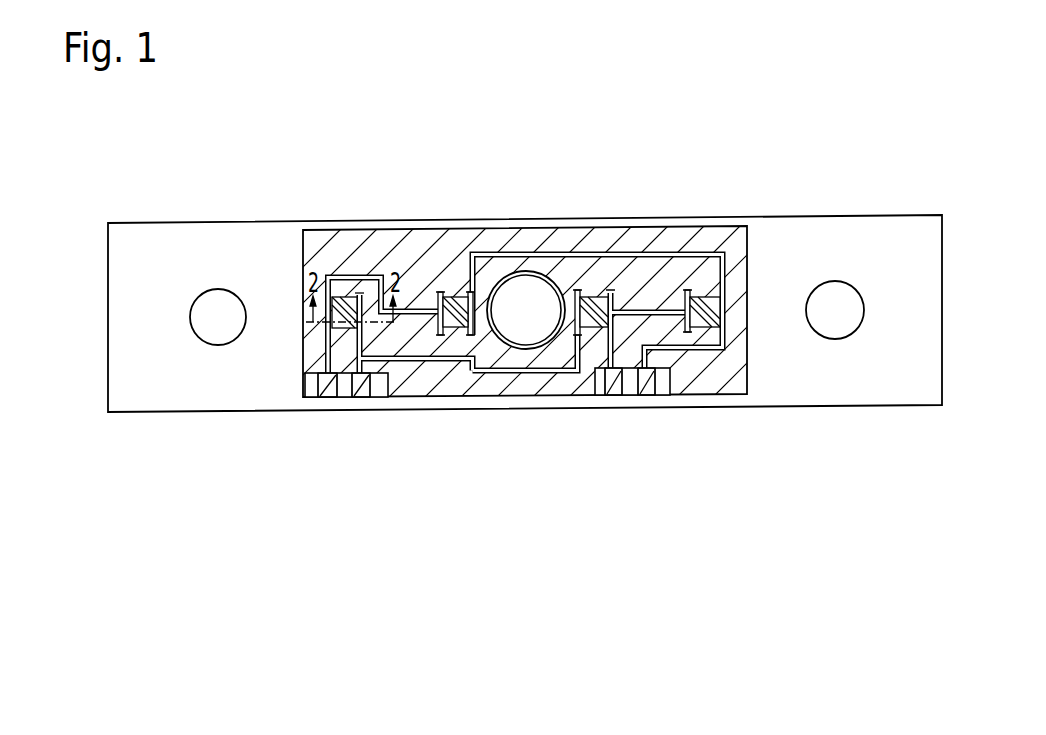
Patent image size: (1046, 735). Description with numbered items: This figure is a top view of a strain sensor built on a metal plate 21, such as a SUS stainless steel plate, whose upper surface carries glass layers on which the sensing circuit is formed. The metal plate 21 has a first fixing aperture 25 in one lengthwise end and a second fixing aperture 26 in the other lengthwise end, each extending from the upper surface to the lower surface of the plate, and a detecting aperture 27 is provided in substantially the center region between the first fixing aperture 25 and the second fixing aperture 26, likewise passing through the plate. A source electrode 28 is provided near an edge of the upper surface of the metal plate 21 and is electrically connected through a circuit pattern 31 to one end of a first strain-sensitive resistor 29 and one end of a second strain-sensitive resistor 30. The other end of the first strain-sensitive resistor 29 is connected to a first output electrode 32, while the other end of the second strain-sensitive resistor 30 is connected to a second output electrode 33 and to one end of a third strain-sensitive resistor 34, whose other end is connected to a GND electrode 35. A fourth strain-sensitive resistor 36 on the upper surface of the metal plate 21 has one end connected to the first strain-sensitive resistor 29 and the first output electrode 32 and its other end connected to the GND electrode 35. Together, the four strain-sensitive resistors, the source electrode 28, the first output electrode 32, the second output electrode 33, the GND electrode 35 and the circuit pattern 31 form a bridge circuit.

The metal plate 21 is at (228, 403).
The first fixing aperture 25 is at (217, 289).
The second fixing aperture 26 is at (840, 282).
The detecting aperture 27 is at (508, 277).
The source electrode 28 is at (640, 395).
The first strain-sensitive resistor 29 is at (697, 290).
The second strain-sensitive resistor 30 is at (447, 297).
The circuit pattern 31 is at (538, 373).
The first output electrode 32 is at (610, 395).
The second output electrode 33 is at (330, 398).
The third strain-sensitive resistor 34 is at (345, 297).
The GND electrode 35 is at (355, 392).
The fourth strain-sensitive resistor 36 is at (597, 290).